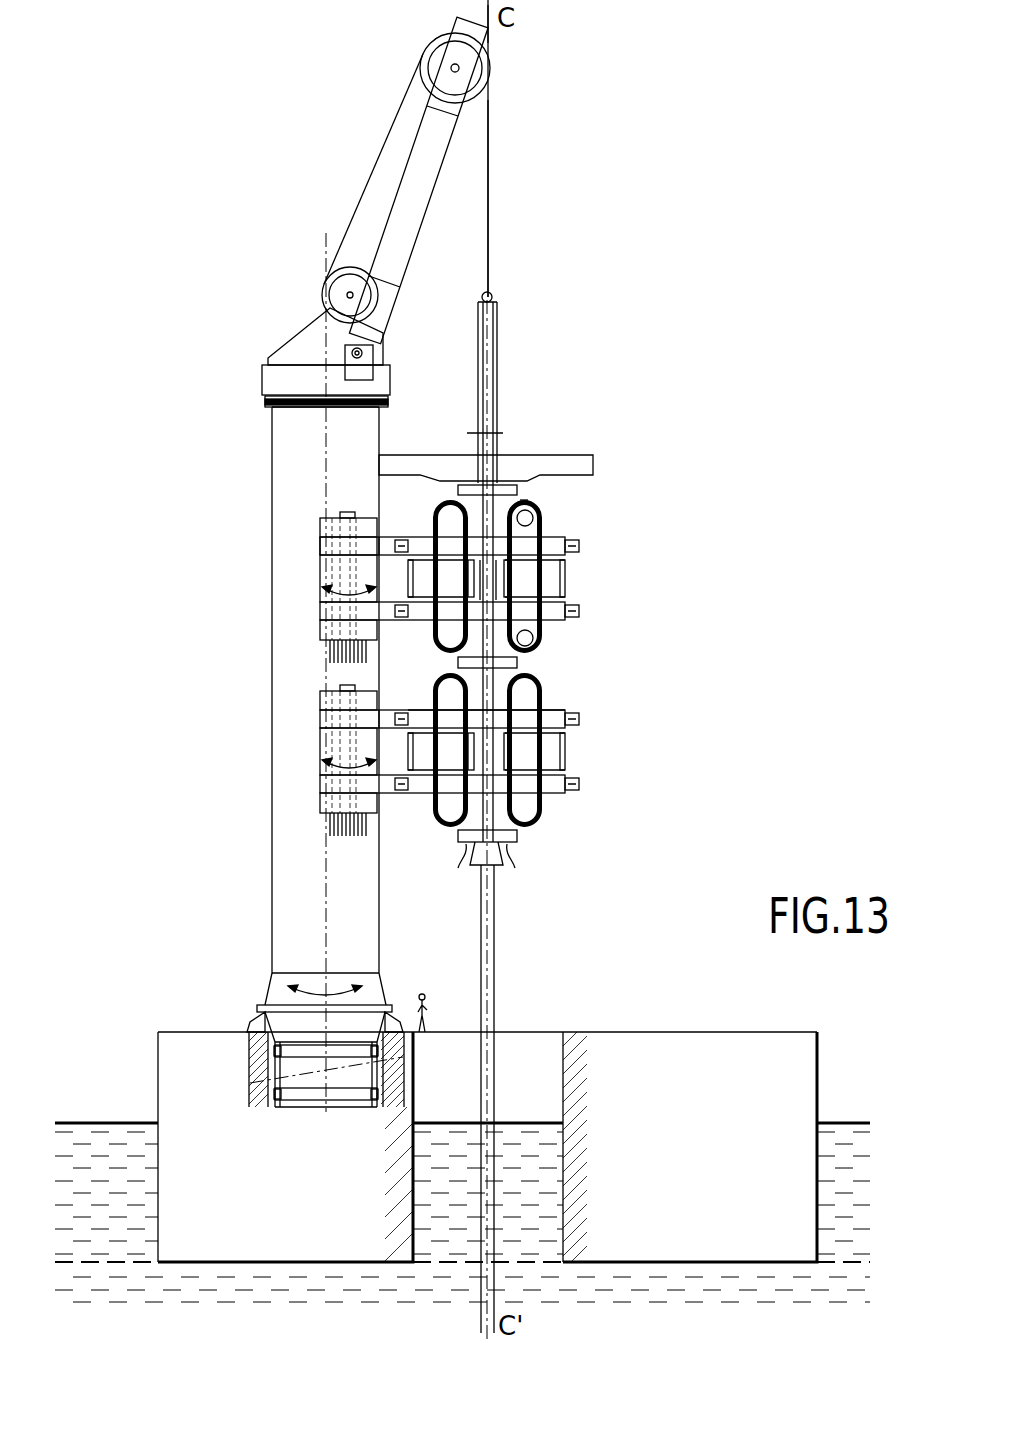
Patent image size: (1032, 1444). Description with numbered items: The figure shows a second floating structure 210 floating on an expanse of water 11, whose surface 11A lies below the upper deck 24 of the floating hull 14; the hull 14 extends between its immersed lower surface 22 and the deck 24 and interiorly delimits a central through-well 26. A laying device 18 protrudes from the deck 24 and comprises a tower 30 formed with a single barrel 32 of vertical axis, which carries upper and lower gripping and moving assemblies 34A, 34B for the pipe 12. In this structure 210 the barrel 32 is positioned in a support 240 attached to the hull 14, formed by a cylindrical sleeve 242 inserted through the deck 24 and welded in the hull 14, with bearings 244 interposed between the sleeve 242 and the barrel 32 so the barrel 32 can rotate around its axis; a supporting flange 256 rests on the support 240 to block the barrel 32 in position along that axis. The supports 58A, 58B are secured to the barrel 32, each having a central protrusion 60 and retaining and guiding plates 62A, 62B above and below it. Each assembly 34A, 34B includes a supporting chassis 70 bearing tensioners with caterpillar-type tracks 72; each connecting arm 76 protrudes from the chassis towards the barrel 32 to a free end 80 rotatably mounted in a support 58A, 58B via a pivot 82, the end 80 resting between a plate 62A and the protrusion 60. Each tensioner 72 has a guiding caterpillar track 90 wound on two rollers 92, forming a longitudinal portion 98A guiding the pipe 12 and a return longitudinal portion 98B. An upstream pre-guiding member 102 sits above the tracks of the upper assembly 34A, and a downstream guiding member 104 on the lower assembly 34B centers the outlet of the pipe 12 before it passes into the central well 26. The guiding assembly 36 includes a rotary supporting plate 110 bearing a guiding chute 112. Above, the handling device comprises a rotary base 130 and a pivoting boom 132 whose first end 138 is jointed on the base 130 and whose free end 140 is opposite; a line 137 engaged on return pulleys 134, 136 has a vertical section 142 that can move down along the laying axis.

The second floating structure 210 is at (158, 252).
The return pulley 136 is at (428, 50).
The free end 140 is at (473, 32).
The pivoting boom 132 is at (427, 137).
The line 137 is at (511, 131).
The vertical section 142 is at (489, 212).
The return pulley 134 is at (346, 284).
The first end 138 is at (380, 333).
The guiding chute 112 is at (498, 318).
The laying device 18 is at (611, 333).
The rotary base 130 is at (265, 383).
The upstream pre-guiding member 102 is at (463, 485).
The longitudinal portion for guiding the pipe 98A is at (488, 540).
The return longitudinal portion 98B is at (503, 575).
The guiding assembly 36 is at (598, 440).
The pivot 82 is at (341, 518).
The rotary supporting plate 110 is at (595, 468).
The retaining and guiding plate 62A is at (324, 523).
The free end 80 is at (324, 543).
The central protrusion 60 is at (324, 566).
The connecting arm 76 is at (384, 546).
The guiding caterpillar track 90 is at (540, 498).
The tensioner with caterpillar-type tracks 72 is at (567, 513).
The gripping and moving assembly 34A is at (677, 543).
The roller 92 is at (538, 527).
The support 58A is at (293, 598).
The supporting chassis 70 is at (614, 622).
The retaining and guiding plate 62B is at (324, 636).
The downstream guiding member 104 is at (518, 661).
The gripping and moving assembly 34B is at (677, 722).
The support 58B is at (296, 750).
The barrel 32 is at (253, 856).
The pipe 12 is at (517, 932).
The tower 30 is at (148, 898).
The floating hull 14 is at (699, 980).
The upper deck 24 is at (640, 1031).
The supporting flange 256 is at (265, 993).
The surface 11A is at (90, 1120).
The support 240 is at (230, 1036).
The cylindrical sleeve 242 is at (263, 1088).
The bearings 244 is at (274, 1102).
The central through-well 26 is at (423, 1113).
The expanse of water 11 is at (462, 1217).
The lower surface 22 is at (695, 1263).